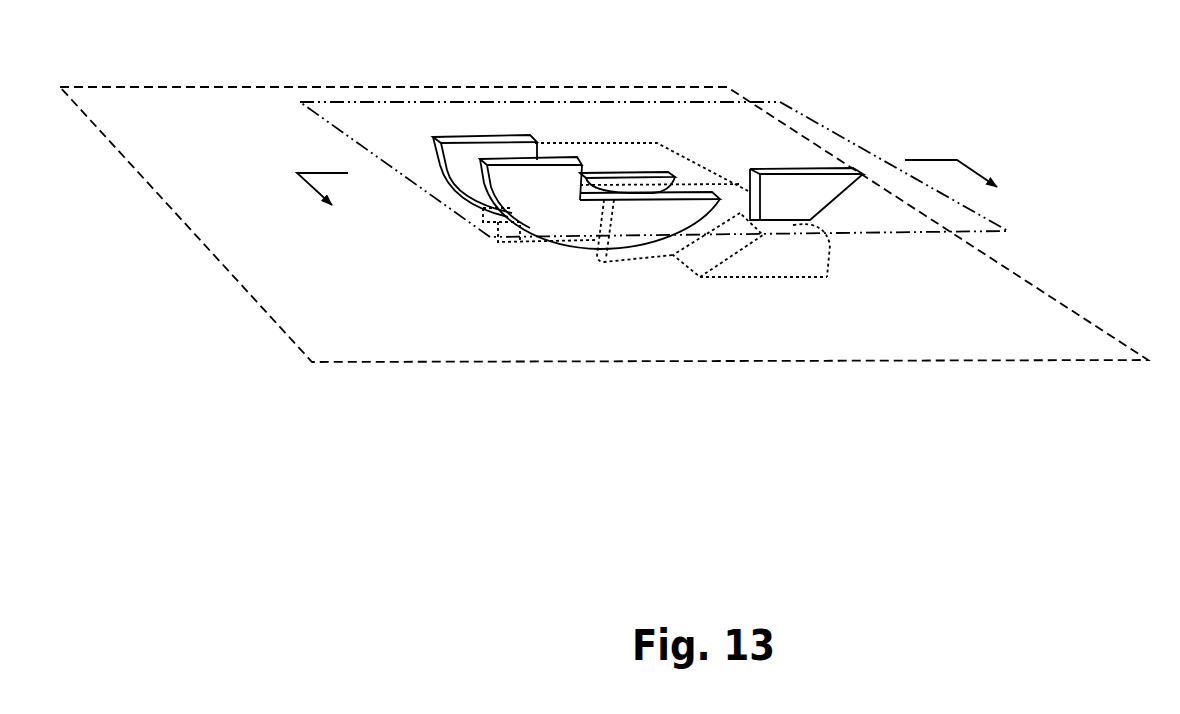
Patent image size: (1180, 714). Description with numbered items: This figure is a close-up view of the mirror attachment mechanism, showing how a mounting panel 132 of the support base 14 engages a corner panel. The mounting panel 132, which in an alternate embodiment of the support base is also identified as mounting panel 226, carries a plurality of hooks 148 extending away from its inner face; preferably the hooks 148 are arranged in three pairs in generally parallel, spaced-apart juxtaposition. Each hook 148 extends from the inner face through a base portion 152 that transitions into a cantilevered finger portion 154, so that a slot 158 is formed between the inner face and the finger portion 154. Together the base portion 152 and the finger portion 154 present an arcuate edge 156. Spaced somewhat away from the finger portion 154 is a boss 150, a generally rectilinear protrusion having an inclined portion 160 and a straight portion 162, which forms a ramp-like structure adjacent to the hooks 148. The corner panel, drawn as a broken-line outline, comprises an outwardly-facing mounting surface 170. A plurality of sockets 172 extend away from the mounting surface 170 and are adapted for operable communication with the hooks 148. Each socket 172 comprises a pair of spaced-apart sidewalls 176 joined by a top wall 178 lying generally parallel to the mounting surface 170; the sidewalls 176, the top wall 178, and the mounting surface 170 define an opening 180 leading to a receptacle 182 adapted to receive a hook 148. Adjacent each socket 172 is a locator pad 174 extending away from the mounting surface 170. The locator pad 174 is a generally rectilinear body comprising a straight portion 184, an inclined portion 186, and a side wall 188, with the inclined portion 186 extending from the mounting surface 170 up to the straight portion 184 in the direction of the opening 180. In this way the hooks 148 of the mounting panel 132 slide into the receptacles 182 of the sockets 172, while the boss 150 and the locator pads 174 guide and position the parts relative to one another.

The support base 14 is at (656, 199).
The mounting panel 132 is at (800, 117).
The mounting panel 226 is at (654, 135).
The hooks 148 is at (437, 163).
The boss 150 is at (827, 167).
The base portion 152 is at (522, 178).
The finger portion 154 is at (648, 202).
The arcuate edge 156 is at (477, 198).
The slot 158 is at (582, 162).
The inclined portion 160 is at (858, 183).
The straight portion 162 is at (815, 205).
The mounting surface 170 is at (255, 100).
The sockets 172 is at (712, 163).
The locator pad 174 is at (802, 282).
The sidewalls 176 is at (617, 262).
The top wall 178 is at (655, 160).
The opening 180 is at (478, 246).
The receptacle 182 is at (498, 242).
The straight portion 184 is at (820, 233).
The inclined portion 186 is at (700, 277).
The side wall 188 is at (772, 258).